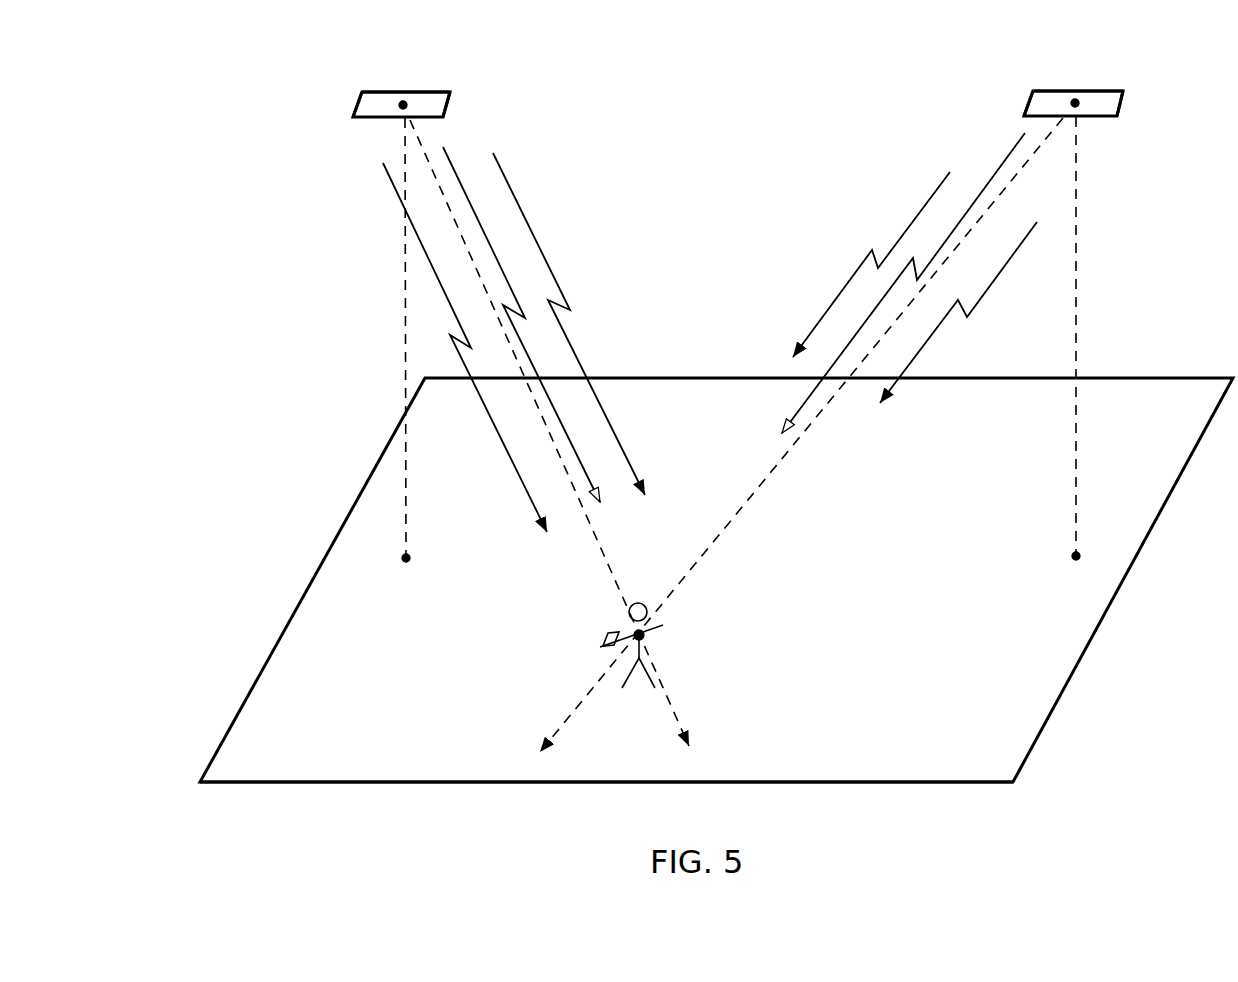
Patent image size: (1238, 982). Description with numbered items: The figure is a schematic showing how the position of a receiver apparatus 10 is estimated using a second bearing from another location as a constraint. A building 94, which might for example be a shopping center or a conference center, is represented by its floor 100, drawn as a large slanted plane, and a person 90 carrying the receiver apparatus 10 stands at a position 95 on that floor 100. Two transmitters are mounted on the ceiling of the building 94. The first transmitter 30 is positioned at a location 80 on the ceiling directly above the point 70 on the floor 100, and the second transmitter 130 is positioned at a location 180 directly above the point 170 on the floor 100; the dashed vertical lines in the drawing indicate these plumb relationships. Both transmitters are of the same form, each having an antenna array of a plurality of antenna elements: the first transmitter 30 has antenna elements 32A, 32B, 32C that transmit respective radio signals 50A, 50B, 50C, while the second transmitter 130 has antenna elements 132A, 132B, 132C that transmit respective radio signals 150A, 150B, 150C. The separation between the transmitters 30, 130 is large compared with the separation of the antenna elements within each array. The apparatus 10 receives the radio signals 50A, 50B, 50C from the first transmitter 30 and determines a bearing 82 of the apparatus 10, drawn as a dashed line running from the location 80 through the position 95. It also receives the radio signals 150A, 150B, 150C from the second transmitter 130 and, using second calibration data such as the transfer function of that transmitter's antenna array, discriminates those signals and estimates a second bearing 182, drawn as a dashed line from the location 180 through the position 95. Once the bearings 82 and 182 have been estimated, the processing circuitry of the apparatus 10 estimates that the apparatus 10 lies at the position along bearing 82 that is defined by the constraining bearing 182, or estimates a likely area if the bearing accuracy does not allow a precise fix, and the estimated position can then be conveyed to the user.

The receiver apparatus 10 is at (601, 642).
The first transmitter 30 is at (1008, 129).
The antenna element 32A is at (1030, 91).
The antenna element 32B is at (1081, 91).
The antenna element 32C is at (1122, 91).
The radio signal 50A is at (845, 283).
The radio signal 50B is at (940, 247).
The radio signal 50C is at (942, 325).
The point on floor 70 is at (1074, 557).
The location of first transmitter 80 is at (1077, 102).
The bearing 82 is at (774, 474).
The user 90 is at (639, 684).
The building 94 is at (1159, 607).
The position 95 is at (644, 638).
The floor 100 is at (886, 784).
The second transmitter 130 is at (356, 144).
The antenna element 132A is at (360, 92).
The antenna element 132B is at (408, 92).
The antenna element 132C is at (450, 92).
The radio signal 150A is at (388, 184).
The radio signal 150B is at (528, 355).
The radio signal 150C is at (553, 275).
The point on floor 170 is at (404, 559).
The location of second transmitter 180 is at (405, 103).
The bearing 182 is at (610, 565).